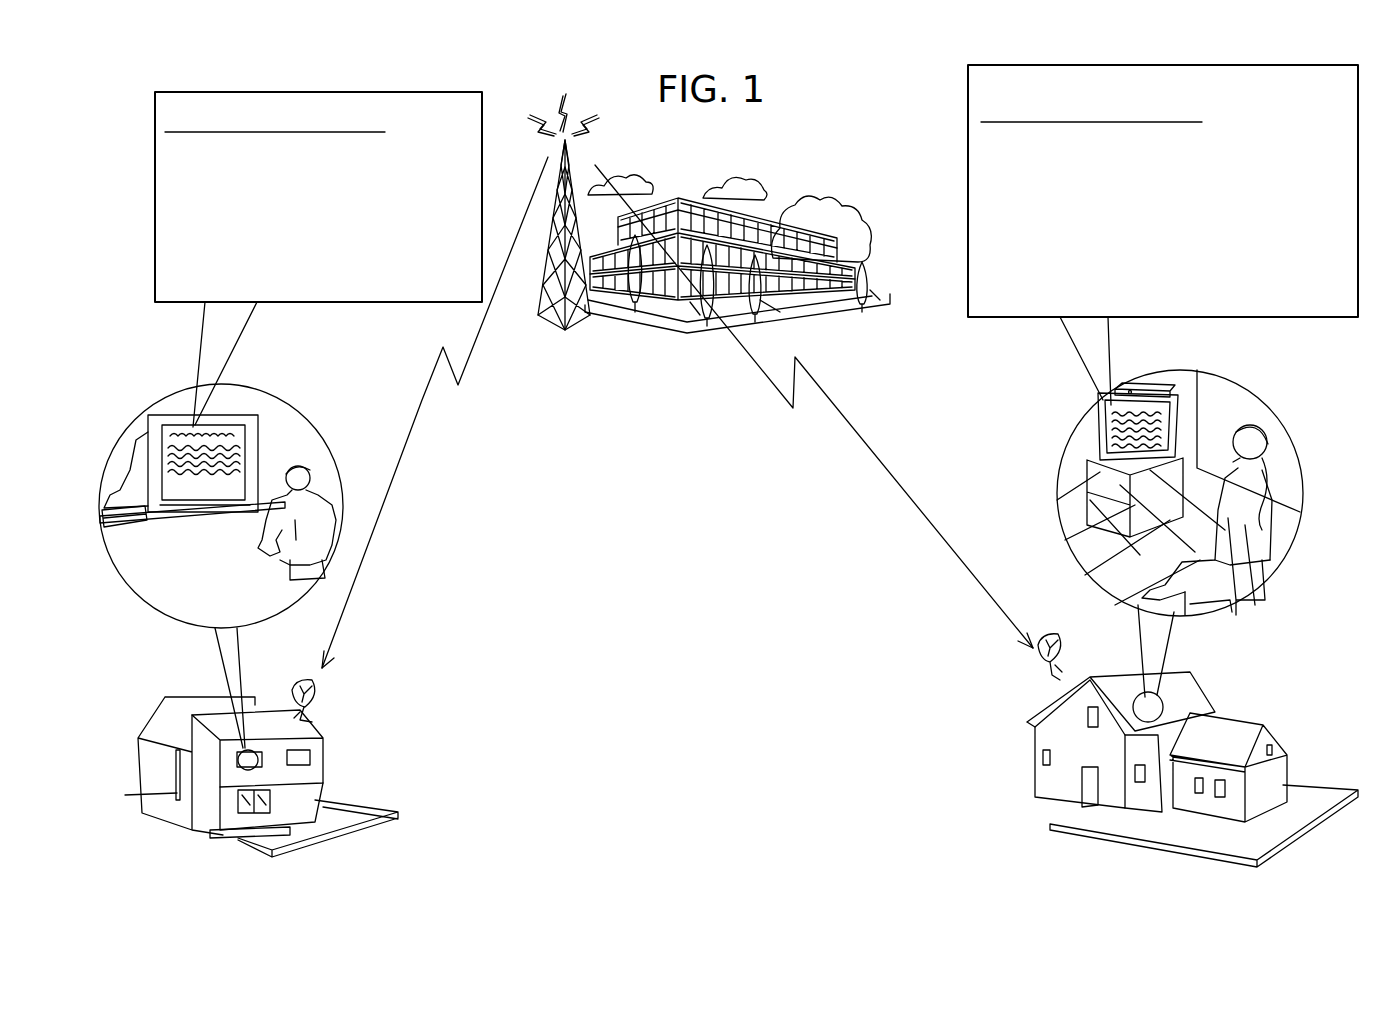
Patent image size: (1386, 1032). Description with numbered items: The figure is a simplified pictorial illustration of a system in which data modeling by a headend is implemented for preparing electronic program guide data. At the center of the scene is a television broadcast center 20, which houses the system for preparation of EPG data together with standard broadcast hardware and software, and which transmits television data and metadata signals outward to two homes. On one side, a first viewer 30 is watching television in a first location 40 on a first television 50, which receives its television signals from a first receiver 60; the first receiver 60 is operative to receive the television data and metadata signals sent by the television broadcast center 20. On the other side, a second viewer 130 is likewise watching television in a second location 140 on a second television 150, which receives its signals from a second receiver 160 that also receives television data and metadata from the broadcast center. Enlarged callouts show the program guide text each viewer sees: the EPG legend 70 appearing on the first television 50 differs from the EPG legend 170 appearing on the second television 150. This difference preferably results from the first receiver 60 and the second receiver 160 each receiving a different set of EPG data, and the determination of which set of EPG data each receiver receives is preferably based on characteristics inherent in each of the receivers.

The television broadcast center 20 is at (795, 165).
The first viewer 30 is at (313, 467).
The first location 40 is at (323, 768).
The first television 50 is at (252, 433).
The first receiver 60 is at (130, 517).
The EPG legend 70 is at (155, 158).
The second viewer 130 is at (1262, 438).
The second location 140 is at (1237, 728).
The second television 150 is at (1175, 420).
The second receiver 160 is at (1143, 385).
The EPG legend 170 is at (968, 160).